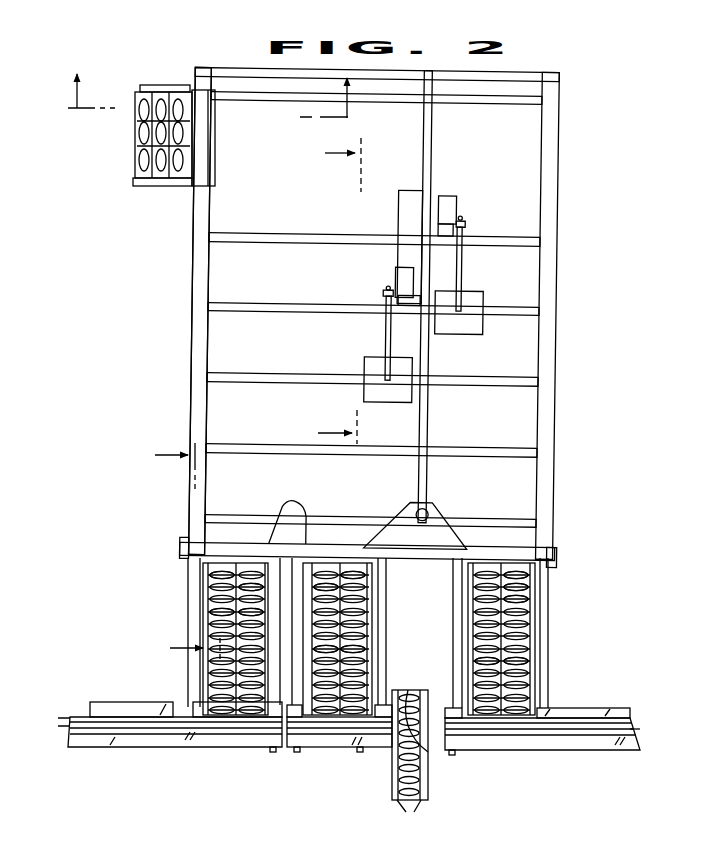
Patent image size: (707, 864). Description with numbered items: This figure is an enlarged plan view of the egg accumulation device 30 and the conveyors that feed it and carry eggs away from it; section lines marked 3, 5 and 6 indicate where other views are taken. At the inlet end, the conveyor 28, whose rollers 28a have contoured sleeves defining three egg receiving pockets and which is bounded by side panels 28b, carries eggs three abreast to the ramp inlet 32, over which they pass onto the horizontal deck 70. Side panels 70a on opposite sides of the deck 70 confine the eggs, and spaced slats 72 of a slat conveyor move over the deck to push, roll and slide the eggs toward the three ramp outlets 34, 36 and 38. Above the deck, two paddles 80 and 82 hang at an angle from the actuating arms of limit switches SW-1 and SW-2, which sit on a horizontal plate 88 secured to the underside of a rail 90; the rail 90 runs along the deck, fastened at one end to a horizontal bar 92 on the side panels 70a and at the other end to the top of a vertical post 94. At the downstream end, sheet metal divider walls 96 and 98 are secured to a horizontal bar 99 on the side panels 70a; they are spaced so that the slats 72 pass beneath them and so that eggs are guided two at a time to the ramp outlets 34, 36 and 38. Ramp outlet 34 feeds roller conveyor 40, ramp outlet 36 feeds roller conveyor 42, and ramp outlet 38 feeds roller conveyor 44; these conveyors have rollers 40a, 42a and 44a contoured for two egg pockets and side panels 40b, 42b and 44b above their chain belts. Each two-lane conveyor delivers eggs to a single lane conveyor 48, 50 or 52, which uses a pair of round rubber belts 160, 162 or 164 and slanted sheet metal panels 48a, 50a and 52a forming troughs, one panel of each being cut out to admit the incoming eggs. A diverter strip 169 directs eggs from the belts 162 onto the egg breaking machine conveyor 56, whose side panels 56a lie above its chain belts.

The conveyor 28 is at (138, 153).
The rollers 28a is at (162, 97).
The side panels 28b is at (178, 88).
The egg accumulation device 30 is at (178, 319).
The ramp inlet 32 is at (208, 137).
The ramp outlet 34 is at (233, 550).
The ramp outlet 36 is at (338, 550).
The ramp outlet 38 is at (490, 553).
The roller conveyor 40 is at (188, 630).
The rollers 40a is at (253, 594).
The side panels 40b is at (253, 619).
The roller conveyor 42 is at (370, 608).
The rollers 42a is at (342, 590).
The side panels 42b is at (309, 642).
The roller conveyor 44 is at (468, 624).
The rollers 44a is at (523, 601).
The side panels 44b is at (490, 660).
The single lane conveyor 48 is at (178, 747).
The sheet metal panels 48a is at (123, 703).
The single lane conveyor 50 is at (340, 750).
The sheet metal panels 50a is at (312, 738).
The single lane conveyor 52 is at (533, 755).
The sheet metal panels 52a is at (592, 715).
The conveyor 56 is at (388, 796).
The side panels 56a is at (413, 810).
The horizontal deck 70 is at (310, 220).
The side panels 70a is at (195, 218).
The slats 72 is at (253, 243).
The paddle 80 is at (365, 396).
The paddle 82 is at (458, 332).
The horizontal plate 88 is at (397, 221).
The rail 90 is at (430, 136).
The horizontal bar 92 is at (532, 75).
The vertical post 94 is at (430, 513).
The divider wall 96 is at (293, 505).
The divider wall 98 is at (418, 512).
The horizontal bar 99 is at (198, 545).
The endless rubber belts 160 is at (45, 720).
The endless rubber belts 162 is at (360, 740).
The endless rubber belts 164 is at (632, 732).
The diverter strip 169 is at (408, 692).
The limit switch SW-1 is at (395, 285).
The limit switch SW-2 is at (447, 210).
The section line 3 is at (347, 291).
The section line 5 is at (207, 102).
The section line 6 is at (178, 552).